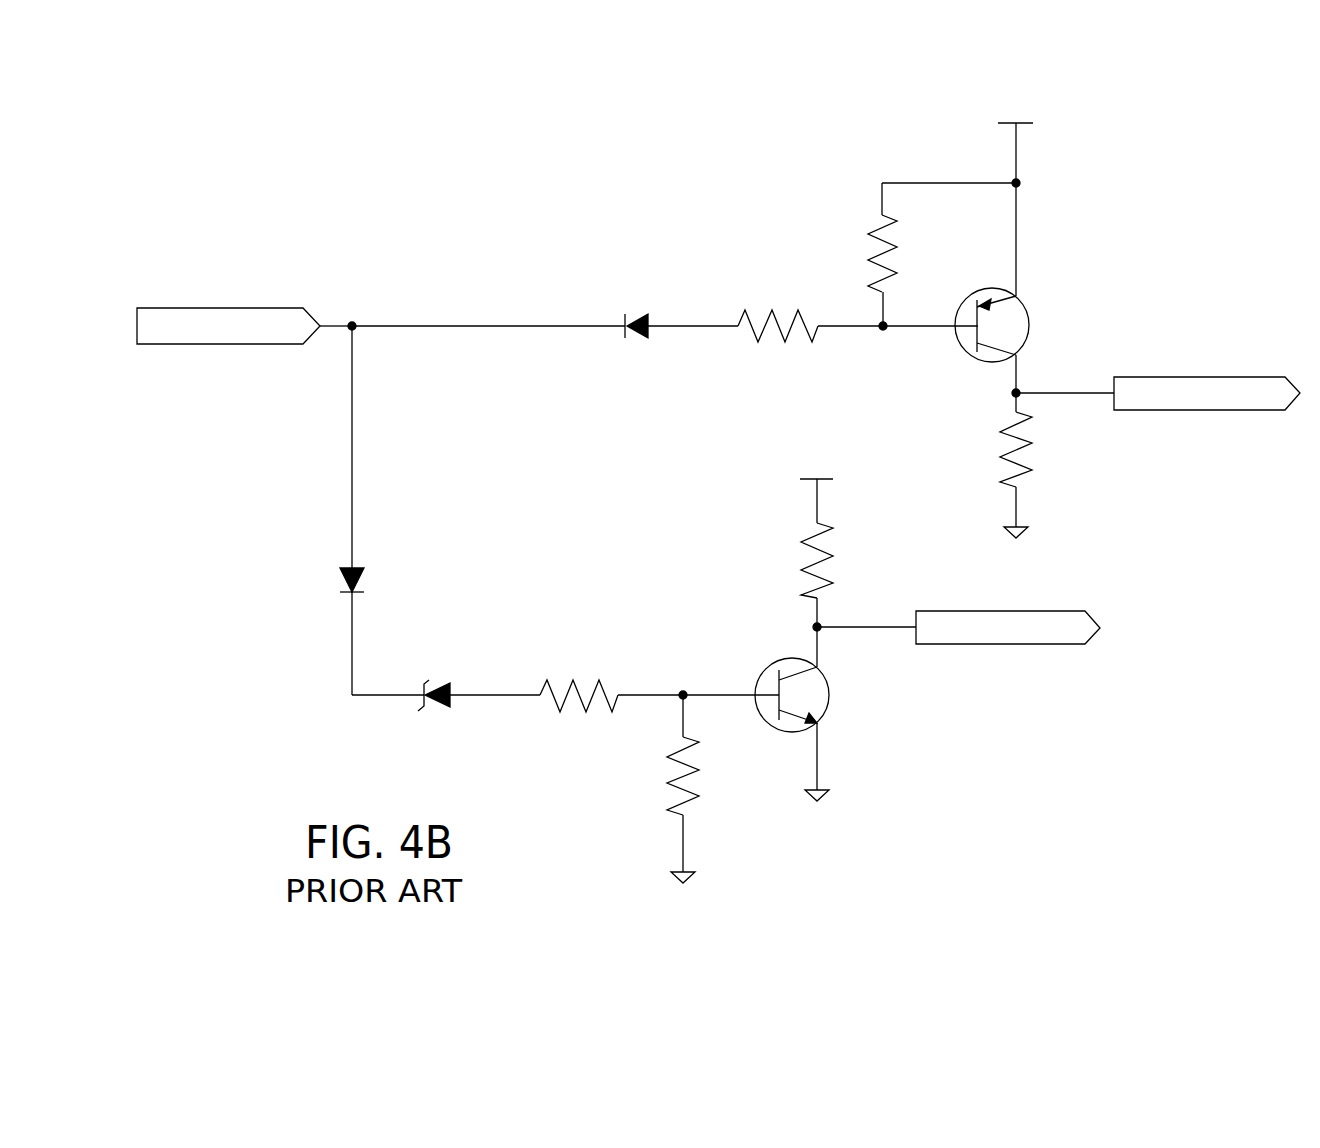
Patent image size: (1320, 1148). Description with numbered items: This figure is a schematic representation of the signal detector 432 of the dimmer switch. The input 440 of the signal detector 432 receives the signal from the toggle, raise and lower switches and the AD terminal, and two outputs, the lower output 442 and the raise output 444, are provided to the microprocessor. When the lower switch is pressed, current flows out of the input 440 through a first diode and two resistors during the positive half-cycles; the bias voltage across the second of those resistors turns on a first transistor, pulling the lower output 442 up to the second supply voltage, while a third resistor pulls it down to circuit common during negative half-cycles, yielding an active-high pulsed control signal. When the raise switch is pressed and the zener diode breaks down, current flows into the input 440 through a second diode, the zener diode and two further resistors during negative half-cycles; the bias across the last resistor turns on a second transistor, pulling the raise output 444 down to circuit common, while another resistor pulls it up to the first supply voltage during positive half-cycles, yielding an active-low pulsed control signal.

The signal detector 432 is at (618, 170).
The input 440 is at (202, 308).
The output AD_LOWER 442 is at (1233, 377).
The output AD_RAISE 444 is at (1040, 644).